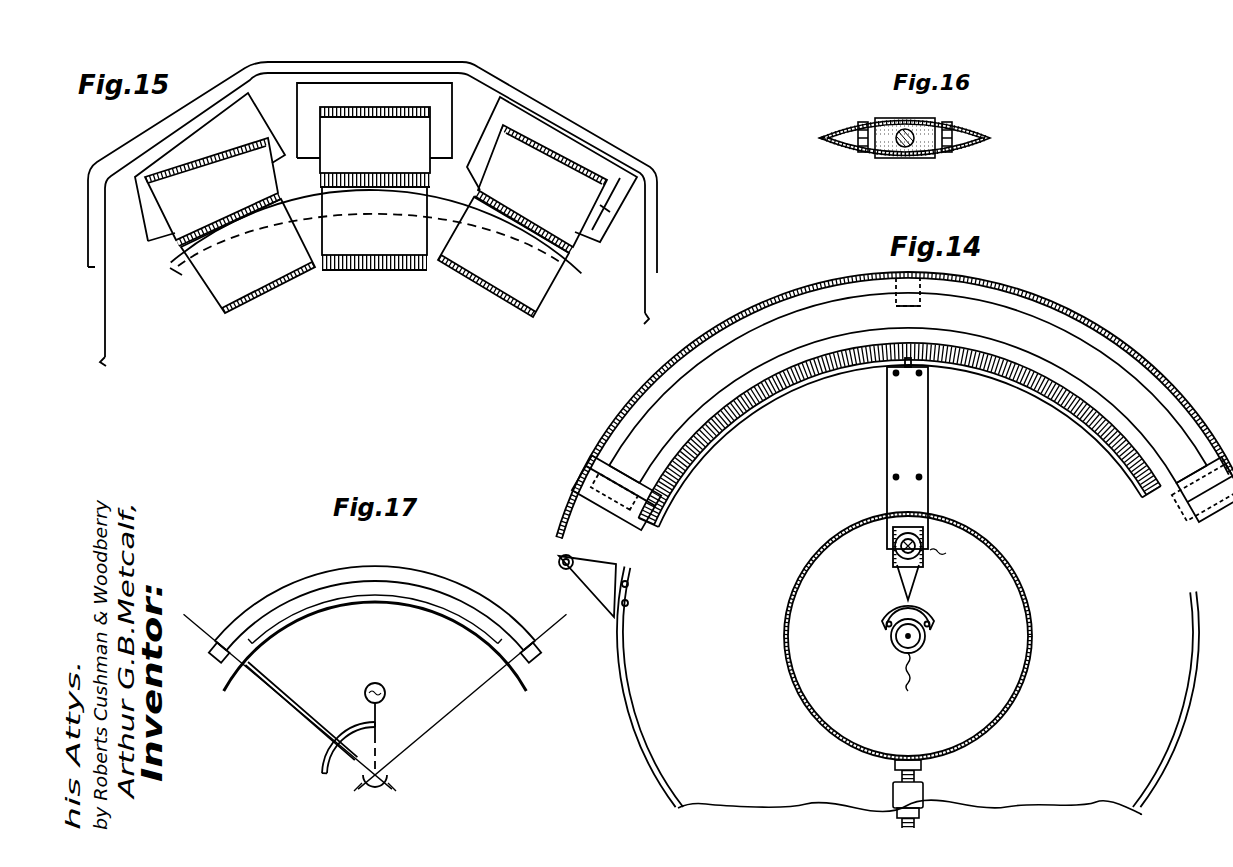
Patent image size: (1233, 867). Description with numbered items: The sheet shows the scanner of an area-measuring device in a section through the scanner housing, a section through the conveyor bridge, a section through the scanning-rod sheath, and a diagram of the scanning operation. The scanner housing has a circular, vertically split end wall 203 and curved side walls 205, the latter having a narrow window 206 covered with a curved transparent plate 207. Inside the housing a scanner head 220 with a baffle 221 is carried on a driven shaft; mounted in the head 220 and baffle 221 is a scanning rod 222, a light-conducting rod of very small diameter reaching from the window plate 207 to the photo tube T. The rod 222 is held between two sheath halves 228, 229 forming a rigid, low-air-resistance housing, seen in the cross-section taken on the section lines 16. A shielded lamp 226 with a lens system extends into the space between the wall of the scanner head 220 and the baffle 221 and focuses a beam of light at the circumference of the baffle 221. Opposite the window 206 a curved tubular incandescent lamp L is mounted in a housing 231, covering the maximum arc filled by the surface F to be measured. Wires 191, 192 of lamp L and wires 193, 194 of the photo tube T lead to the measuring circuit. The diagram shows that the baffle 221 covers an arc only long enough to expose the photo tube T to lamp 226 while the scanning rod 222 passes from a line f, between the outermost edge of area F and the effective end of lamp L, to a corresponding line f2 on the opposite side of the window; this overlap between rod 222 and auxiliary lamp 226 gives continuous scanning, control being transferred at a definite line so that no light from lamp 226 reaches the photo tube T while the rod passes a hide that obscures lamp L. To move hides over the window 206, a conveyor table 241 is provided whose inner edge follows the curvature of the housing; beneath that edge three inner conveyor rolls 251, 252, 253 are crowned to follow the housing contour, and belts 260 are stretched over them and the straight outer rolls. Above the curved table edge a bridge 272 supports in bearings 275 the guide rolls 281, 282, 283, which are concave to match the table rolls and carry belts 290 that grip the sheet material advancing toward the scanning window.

In FIG. 14, the section lines 16— 16 is at (887, 477).
In FIG. 14, the wire 191 is at (946, 553).
In FIG. 14, the wire 192 is at (946, 560).
In FIG. 14, the wire 193 is at (905, 688).
In FIG. 14, the wire 194 is at (912, 688).
In FIG. 14, the end wall 203 is at (1150, 722).
In FIG. 14, the curved side wall 205 is at (652, 732).
In FIG. 14, the window 206 is at (902, 493).
In FIG. 17, the window 206 is at (530, 692).
In FIG. 14, the transparent plate 207 is at (755, 398).
In FIG. 14, the scanner head 220 is at (1035, 633).
In FIG. 14, the baffle 221 is at (937, 613).
In FIG. 17, the baffle 221 is at (324, 773).
In FIG. 16, the scanning rod 222 is at (903, 130).
In FIG. 14, the scanning rod 222 is at (905, 364).
In FIG. 17, the scanning rod 222 is at (290, 698).
In FIG. 14, the shielded lamp 226 is at (913, 540).
In FIG. 17, the shielded lamp 226 is at (387, 690).
In FIG. 16, the sheath half 228 is at (960, 132).
In FIG. 14, the sheath half 228 is at (918, 452).
In FIG. 16, the sheath half 229 is at (968, 148).
In FIG. 14, the housing 231 is at (622, 412).
In FIG. 15, the conveyor table 241 is at (183, 258).
In FIG. 15, the inner conveyor roll 251 is at (503, 257).
In FIG. 15, the inner conveyor roll 252 is at (374, 228).
In FIG. 15, the inner conveyor roll 253 is at (248, 256).
In FIG. 15, the belt 260 is at (178, 266).
In FIG. 15, the bridge 272 is at (500, 88).
In FIG. 15, the bearing 275 is at (615, 207).
In FIG. 15, the guide roll 281 is at (552, 175).
In FIG. 15, the guide roll 282 is at (374, 135).
In FIG. 15, the guide roll 283 is at (210, 169).
In FIG. 15, the belt 290 is at (185, 247).
In FIG. 14, the tubular incandescent lamp L is at (908, 380).
In FIG. 17, the tubular incandescent lamp L is at (424, 580).
In FIG. 14, the surface to be measured F is at (1070, 393).
In FIG. 17, the surface to be measured F is at (470, 613).
In FIG. 14, the photo tube T is at (925, 640).
In FIG. 17, the photo tube T is at (393, 774).
In FIG. 17, the line f is at (220, 643).
In FIG. 17, the line f1 f2 is at (558, 622).